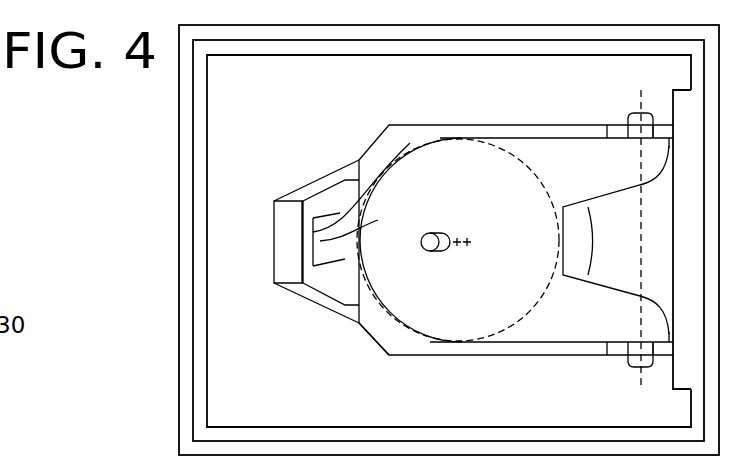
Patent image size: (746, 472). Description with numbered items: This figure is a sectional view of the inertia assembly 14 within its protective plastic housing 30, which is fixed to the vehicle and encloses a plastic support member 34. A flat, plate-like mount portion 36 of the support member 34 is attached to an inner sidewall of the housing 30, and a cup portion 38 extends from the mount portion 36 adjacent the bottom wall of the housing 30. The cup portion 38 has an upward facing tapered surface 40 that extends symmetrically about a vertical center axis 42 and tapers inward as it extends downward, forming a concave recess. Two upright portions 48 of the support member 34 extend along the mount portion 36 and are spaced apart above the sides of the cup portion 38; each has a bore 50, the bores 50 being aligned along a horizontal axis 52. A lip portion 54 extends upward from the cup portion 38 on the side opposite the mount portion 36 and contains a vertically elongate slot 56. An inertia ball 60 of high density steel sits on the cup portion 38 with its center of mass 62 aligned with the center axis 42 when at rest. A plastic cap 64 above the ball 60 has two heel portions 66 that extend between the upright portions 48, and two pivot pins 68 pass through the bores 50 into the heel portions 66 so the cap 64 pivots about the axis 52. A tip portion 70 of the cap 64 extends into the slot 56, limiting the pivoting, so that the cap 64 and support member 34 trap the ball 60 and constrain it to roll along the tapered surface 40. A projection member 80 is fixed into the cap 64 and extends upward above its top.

The inertia assembly 14 is at (18, 247).
The protective plastic housing 30 is at (178, 113).
The support member 34 is at (358, 137).
The mount portion 36 is at (682, 371).
The cup portion 38 is at (377, 334).
The tapered surface 40 is at (585, 247).
The vertical center axis 42 is at (470, 240).
The upright portions 48 is at (618, 126).
The bore 50 is at (622, 134).
The horizontal axis 52 is at (640, 238).
The lip portion 54 is at (322, 185).
The vertically elongate slot 56 is at (345, 262).
The inertia ball 60 is at (520, 287).
The center of mass 62 is at (455, 248).
The cap 64 is at (495, 368).
The heel portions 66 is at (600, 178).
The pivot pins 68 is at (629, 114).
The tip portion 70 is at (365, 222).
The projection member 80 is at (433, 233).